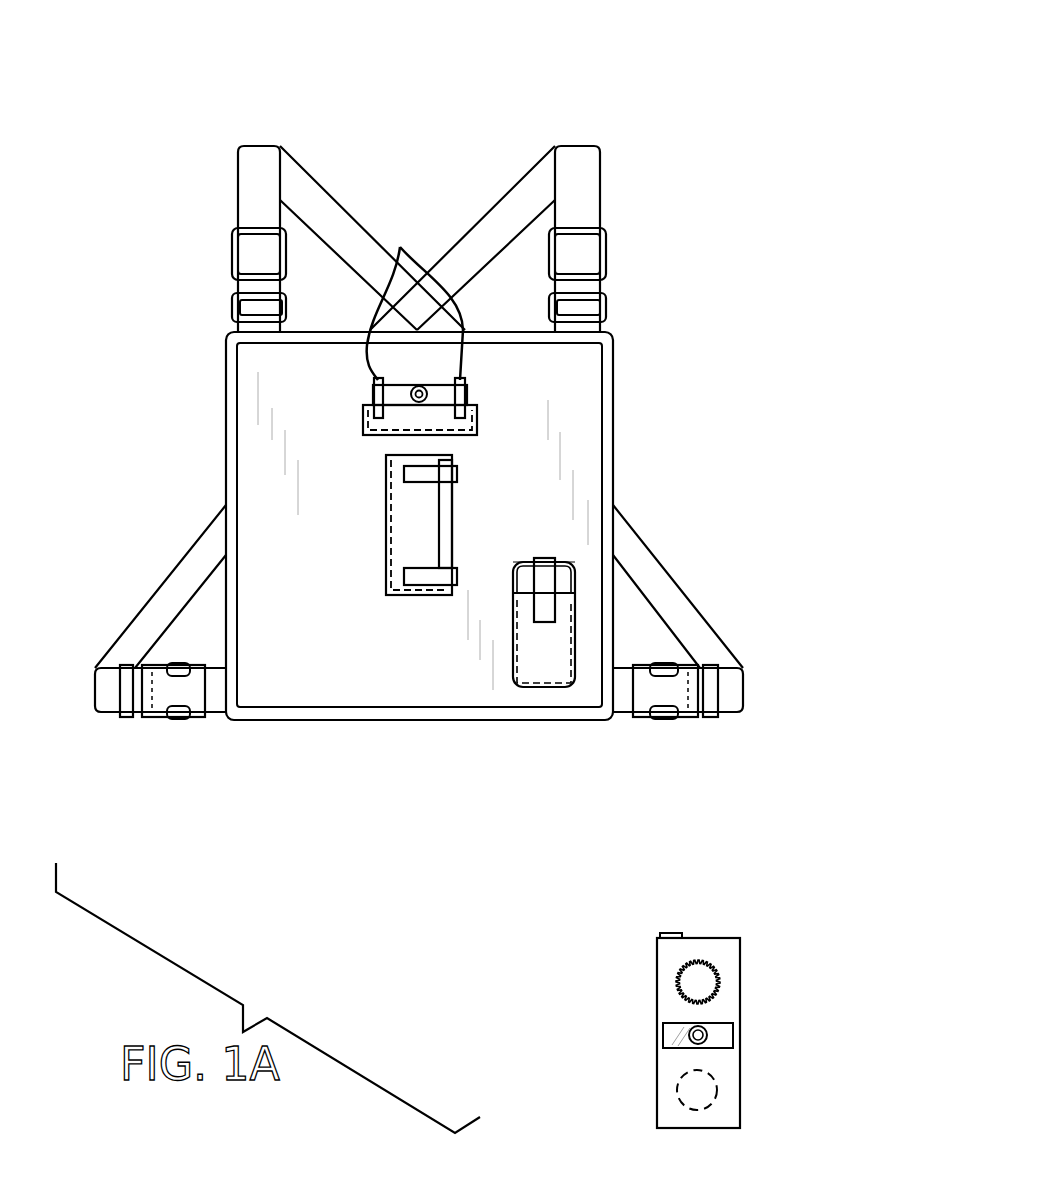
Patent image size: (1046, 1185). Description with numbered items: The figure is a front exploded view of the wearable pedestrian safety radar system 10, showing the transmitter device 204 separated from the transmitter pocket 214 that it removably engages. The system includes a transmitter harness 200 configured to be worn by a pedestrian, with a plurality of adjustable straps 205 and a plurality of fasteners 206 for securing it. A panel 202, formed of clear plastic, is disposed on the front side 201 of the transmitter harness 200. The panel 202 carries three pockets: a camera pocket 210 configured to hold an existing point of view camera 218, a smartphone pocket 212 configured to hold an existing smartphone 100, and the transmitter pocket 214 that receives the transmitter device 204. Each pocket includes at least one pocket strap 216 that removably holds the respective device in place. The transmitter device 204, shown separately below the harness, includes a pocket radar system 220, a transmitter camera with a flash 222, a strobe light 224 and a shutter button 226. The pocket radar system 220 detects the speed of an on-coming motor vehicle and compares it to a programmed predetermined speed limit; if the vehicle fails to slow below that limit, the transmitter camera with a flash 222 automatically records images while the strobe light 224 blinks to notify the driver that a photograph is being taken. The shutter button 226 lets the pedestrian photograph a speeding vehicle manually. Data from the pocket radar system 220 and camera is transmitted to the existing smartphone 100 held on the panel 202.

The wearable pedestrian safety radar system 10 is at (134, 90).
The existing smartphone 100 is at (563, 585).
The transmitter harness 200 is at (583, 187).
The front side 201 is at (248, 402).
The panel 202 is at (605, 372).
The transmitter device 204 is at (443, 540).
The adjustable straps 205 is at (162, 602).
The fasteners 206 is at (164, 695).
The camera pocket 210 is at (466, 428).
The smartphone pocket 212 is at (556, 675).
The transmitter pocket 214 is at (433, 509).
The pocket strap 216 is at (472, 745).
The point of view camera 218 is at (445, 393).
The pocket radar system 220 is at (712, 1085).
The transmitter camera with a flash 222 is at (722, 1035).
The strobe light 224 is at (720, 970).
The shutter button 226 is at (672, 933).